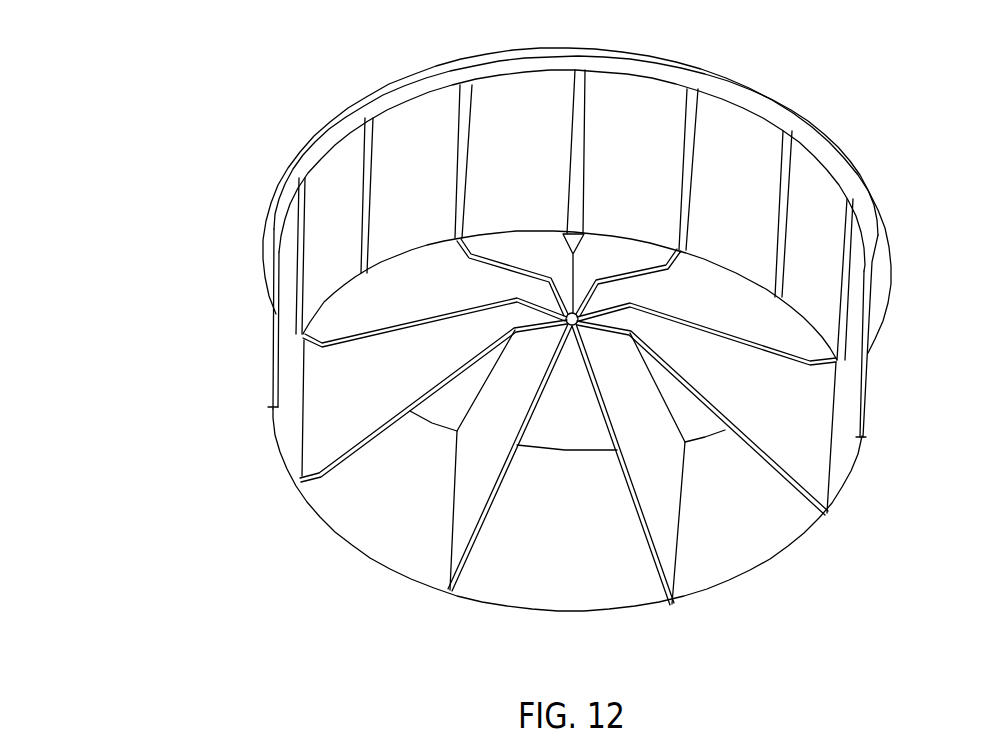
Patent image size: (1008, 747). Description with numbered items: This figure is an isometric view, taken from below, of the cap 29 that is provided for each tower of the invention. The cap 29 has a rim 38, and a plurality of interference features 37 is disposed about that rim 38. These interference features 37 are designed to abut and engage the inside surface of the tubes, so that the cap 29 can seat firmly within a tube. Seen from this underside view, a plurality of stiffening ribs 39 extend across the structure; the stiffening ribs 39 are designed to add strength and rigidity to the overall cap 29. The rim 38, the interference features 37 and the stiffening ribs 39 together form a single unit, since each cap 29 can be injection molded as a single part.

The cap 29 is at (246, 117).
The interference features 37 is at (690, 127).
The rim 38 is at (740, 533).
The stiffening ribs 39 is at (368, 382).